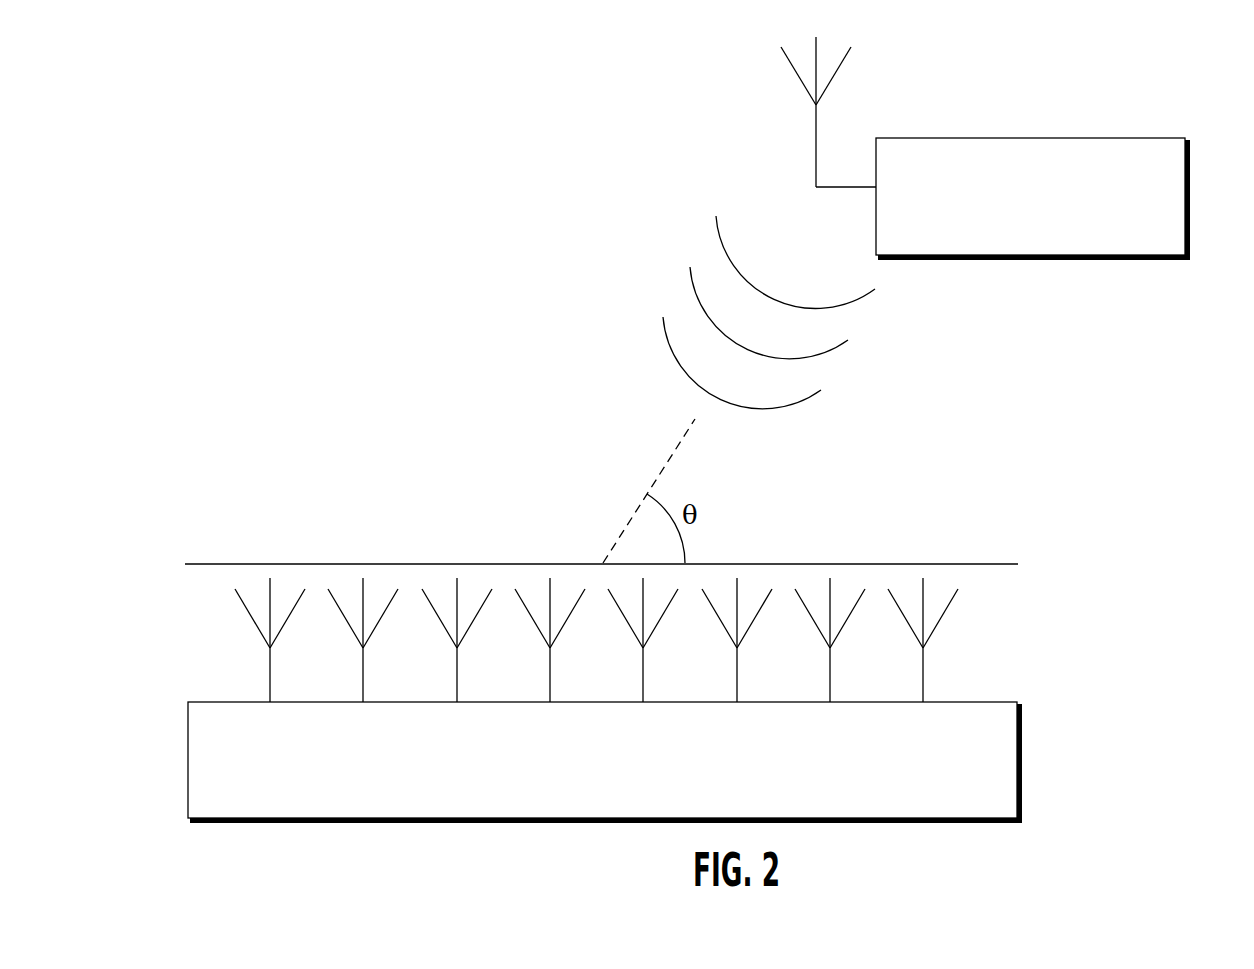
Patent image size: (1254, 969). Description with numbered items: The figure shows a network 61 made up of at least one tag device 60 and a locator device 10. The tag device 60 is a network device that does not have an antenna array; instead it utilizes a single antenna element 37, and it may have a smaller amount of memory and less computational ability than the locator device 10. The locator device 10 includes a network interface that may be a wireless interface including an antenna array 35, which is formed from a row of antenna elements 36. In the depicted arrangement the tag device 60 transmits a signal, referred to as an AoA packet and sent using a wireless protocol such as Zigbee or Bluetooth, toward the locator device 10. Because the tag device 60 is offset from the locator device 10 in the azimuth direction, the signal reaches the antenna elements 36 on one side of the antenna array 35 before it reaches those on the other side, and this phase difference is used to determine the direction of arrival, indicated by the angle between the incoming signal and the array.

The locator device 10 is at (1022, 760).
The antenna array 35 is at (646, 640).
The antenna elements 36 is at (270, 677).
The single antenna element 37 is at (818, 123).
The tag device 60 is at (1190, 192).
The network 61 is at (326, 247).